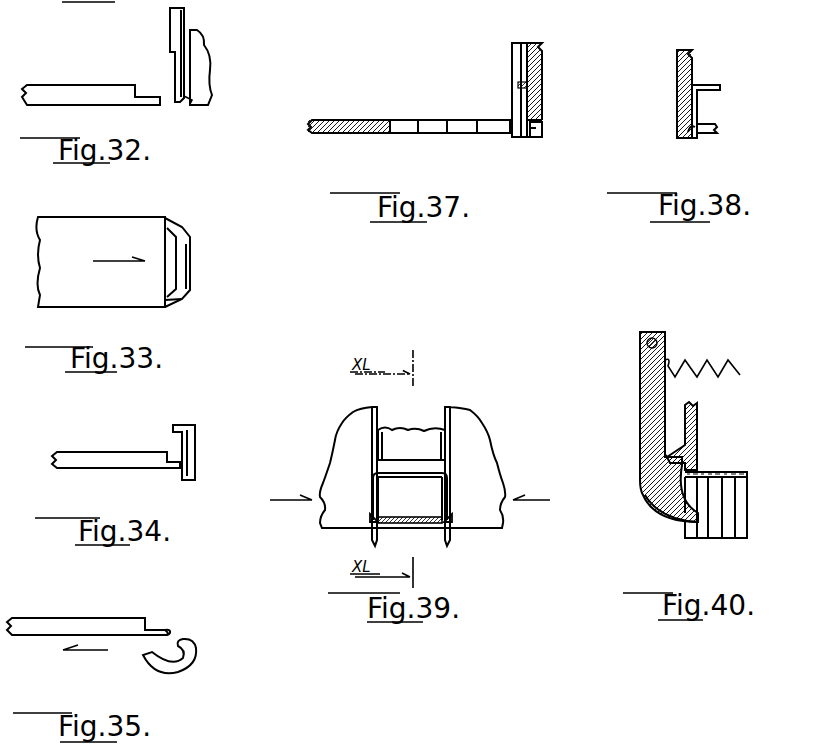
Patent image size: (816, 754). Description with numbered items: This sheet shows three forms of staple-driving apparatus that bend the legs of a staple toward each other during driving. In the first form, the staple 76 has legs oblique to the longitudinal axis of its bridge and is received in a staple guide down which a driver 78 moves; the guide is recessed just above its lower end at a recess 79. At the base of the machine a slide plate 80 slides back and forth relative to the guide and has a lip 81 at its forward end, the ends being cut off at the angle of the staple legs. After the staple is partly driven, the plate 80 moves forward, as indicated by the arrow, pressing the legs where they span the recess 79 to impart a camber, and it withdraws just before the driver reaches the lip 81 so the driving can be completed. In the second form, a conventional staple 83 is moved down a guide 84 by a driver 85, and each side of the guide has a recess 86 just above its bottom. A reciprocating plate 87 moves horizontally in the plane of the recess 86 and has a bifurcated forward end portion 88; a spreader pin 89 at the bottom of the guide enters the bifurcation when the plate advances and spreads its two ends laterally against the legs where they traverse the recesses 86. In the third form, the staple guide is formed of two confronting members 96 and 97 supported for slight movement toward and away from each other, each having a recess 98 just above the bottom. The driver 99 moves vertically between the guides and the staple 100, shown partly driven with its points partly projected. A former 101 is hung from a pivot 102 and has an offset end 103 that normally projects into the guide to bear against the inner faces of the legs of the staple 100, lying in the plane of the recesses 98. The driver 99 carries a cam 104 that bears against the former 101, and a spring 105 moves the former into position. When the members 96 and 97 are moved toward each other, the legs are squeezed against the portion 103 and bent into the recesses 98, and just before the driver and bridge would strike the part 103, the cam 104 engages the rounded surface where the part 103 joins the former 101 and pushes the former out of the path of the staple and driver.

In FIG. 32, the staple 76 is at (181, 72).
In FIG. 33, the staple 76 is at (173, 257).
In FIG. 34, the staple 76 is at (190, 447).
In FIG. 35, the staple 76 is at (197, 648).
In FIG. 32, the driver 78 is at (172, 28).
In FIG. 32, the recess 79 is at (192, 98).
In FIG. 32, the slide plate 80 is at (62, 97).
In FIG. 33, the slide plate 80 is at (128, 292).
In FIG. 34, the slide plate 80 is at (100, 463).
In FIG. 35, the slide plate 80 is at (110, 618).
In FIG. 32, the lip 81 is at (155, 103).
In FIG. 33, the lip 81 is at (170, 293).
In FIG. 34, the lip 81 is at (177, 472).
In FIG. 35, the lip 81 is at (160, 630).
In FIG. 37, the staple 83 is at (523, 85).
In FIG. 38, the staple 83 is at (715, 83).
In FIG. 37, the guide 84 is at (535, 102).
In FIG. 38, the guide 84 is at (677, 97).
In FIG. 37, the driver 85 is at (520, 58).
In FIG. 37, the recess 86 is at (522, 125).
In FIG. 38, the recess 86 is at (679, 133).
In FIG. 37, the reciprocating plate 87 is at (343, 120).
In FIG. 37, the bifurcated forward end portion 88 is at (433, 120).
In FIG. 37, the spreader pin 89 is at (537, 125).
In FIG. 39, the confronting guide member 96 is at (350, 472).
In FIG. 39, the confronting guide member 97 is at (477, 465).
In FIG. 39, the recess 98 is at (480, 543).
In FIG. 39, the driver 99 is at (397, 442).
In FIG. 40, the driver 99 is at (688, 443).
In FIG. 39, the staple 100 is at (411, 473).
In FIG. 40, the staple 100 is at (660, 517).
In FIG. 39, the former 101 is at (412, 524).
In FIG. 40, the former 101 is at (648, 492).
In FIG. 40, the pivot 102 is at (648, 344).
In FIG. 40, the offset end 103 is at (685, 532).
In FIG. 40, the cam 104 is at (665, 454).
In FIG. 40, the spring 105 is at (697, 360).